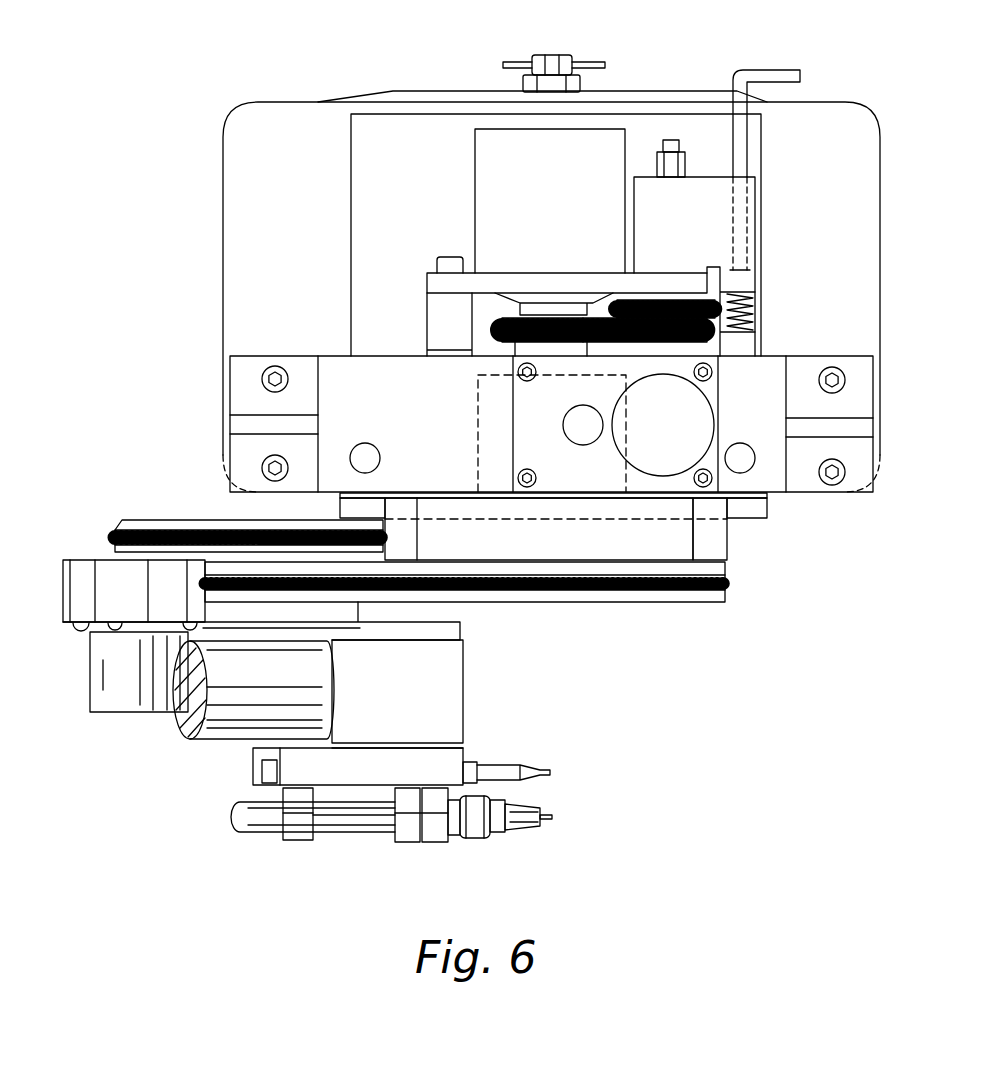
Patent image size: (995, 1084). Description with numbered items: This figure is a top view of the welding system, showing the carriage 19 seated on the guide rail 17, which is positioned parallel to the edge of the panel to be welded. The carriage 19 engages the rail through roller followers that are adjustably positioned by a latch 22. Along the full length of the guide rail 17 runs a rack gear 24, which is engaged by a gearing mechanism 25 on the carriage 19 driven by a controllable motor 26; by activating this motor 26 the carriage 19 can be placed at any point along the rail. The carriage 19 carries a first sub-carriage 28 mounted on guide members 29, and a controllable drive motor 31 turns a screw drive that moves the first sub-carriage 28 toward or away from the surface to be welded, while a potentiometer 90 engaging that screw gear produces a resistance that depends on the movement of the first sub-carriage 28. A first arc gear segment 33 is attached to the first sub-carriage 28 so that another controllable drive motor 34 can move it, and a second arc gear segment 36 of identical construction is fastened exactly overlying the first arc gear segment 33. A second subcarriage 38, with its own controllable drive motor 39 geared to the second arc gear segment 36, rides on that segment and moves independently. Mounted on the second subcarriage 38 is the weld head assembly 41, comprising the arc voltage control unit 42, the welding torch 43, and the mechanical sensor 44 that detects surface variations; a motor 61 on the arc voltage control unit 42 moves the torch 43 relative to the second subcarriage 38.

The guide rail 17 is at (243, 375).
The carriage 19 is at (846, 105).
The latch 22 is at (560, 58).
The rack gear 24 is at (248, 414).
The gearing mechanism 25 is at (667, 300).
The controllable motor 26 is at (600, 130).
The first sub-carriage 28 is at (735, 512).
The guide members 29 is at (372, 443).
The controllable drive motor 31 is at (698, 404).
The first arc gear segment 33 is at (145, 520).
The controllable drive motor 34 is at (478, 400).
The second arc gear segment 36 is at (600, 602).
The second subcarriage 38 is at (63, 597).
The controllable drive motor 39 is at (90, 682).
The weld head assembly 41 is at (232, 770).
The arc voltage control unit 42 is at (452, 696).
The welding torch 43 is at (518, 835).
The mechanical sensor 44 is at (505, 762).
The motor 61 is at (210, 738).
The potentiometer 90 is at (582, 446).